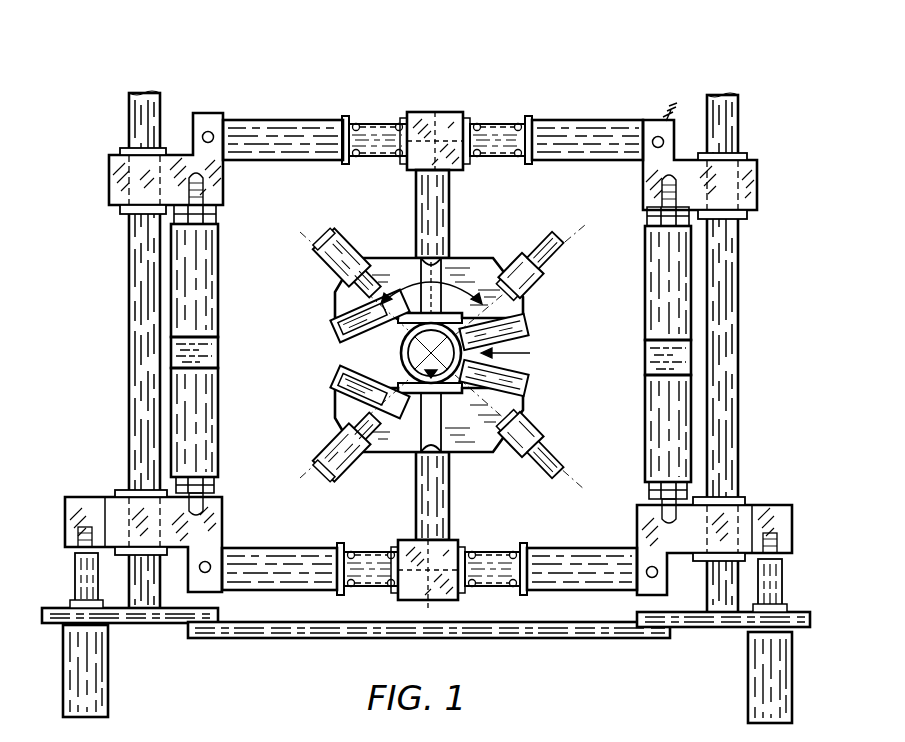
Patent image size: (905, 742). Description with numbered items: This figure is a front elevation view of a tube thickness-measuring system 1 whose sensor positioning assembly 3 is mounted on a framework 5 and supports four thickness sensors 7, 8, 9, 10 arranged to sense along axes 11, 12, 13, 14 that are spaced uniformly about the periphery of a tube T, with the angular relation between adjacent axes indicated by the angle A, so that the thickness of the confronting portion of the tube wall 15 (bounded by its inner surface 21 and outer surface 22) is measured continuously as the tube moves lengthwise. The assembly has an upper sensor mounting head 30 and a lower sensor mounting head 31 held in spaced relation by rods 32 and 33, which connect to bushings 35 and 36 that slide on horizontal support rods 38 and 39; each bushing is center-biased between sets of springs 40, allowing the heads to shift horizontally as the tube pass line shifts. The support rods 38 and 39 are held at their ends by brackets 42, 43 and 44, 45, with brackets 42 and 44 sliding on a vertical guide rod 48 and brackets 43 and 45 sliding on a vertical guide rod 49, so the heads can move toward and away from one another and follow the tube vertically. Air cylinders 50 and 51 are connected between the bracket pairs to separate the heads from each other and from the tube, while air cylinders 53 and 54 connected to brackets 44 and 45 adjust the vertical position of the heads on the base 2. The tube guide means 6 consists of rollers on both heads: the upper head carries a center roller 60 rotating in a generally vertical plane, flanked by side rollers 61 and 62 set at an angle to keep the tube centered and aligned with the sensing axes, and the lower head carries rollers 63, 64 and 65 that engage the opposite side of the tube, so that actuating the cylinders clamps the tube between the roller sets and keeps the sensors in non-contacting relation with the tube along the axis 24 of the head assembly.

The system 1 is at (291, 110).
The base 2 is at (258, 628).
The sensor positioning assembly 3 is at (425, 349).
The framework 5 is at (670, 108).
The tube guide means 6 is at (425, 382).
The thickness sensor 7 is at (326, 242).
The thickness sensor 8 is at (548, 250).
The thickness sensor 9 is at (535, 470).
The thickness sensor 10 is at (316, 464).
The sensing axis 11 is at (300, 233).
The sensing axis 12 is at (556, 240).
The sensing axis 13 is at (548, 468).
The sensing axis 14 is at (335, 450).
The tube wall 15 is at (508, 392).
The inner surface 21 is at (400, 365).
The outer surface 22 is at (400, 344).
The axis 24 is at (432, 196).
The upper sensor mounting head 30 is at (392, 262).
The lower sensor mounting head 31 is at (472, 440).
The rod 32 is at (440, 216).
The rod 33 is at (420, 511).
The bushing 35 is at (428, 118).
The bushing 36 is at (432, 590).
The horizontal support rod 38 is at (358, 135).
The horizontal support rod 39 is at (358, 572).
The springs 40 is at (385, 120).
The bracket 42 is at (208, 118).
The bracket 43 is at (655, 123).
The bracket 44 is at (210, 540).
The bracket 45 is at (652, 590).
The vertical guide rod 48 is at (142, 334).
The vertical guide rod 49 is at (720, 337).
The air cylinder 50 is at (205, 323).
The air cylinder 51 is at (668, 318).
The air cylinder 53 is at (85, 676).
The air cylinder 54 is at (765, 680).
The center roller 60 is at (426, 262).
The side roller 61 is at (335, 304).
The side roller 62 is at (528, 326).
The roller 63 is at (395, 442).
The roller 64 is at (338, 392).
The roller 65 is at (530, 396).
The angle A is at (431, 292).
The tube T is at (513, 349).